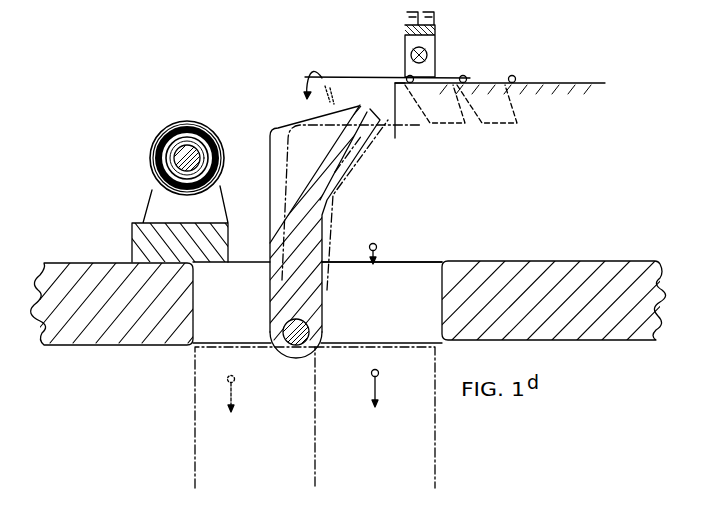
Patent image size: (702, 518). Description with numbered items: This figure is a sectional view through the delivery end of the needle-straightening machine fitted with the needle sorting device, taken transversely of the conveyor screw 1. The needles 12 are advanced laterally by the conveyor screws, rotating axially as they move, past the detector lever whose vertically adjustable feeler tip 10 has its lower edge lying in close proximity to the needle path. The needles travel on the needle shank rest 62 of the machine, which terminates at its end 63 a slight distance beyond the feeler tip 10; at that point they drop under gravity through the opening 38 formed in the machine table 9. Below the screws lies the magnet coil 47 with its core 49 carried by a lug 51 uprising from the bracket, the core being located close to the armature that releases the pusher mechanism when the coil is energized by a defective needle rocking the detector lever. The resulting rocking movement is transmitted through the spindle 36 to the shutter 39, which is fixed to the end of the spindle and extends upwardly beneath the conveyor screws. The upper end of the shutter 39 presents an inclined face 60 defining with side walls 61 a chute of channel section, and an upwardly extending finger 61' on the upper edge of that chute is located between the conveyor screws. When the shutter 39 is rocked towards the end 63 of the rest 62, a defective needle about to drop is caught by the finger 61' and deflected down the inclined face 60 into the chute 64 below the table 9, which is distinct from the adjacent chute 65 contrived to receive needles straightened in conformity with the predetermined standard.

The conveyor screw 1 is at (352, 112).
The machine table 9 is at (353, 303).
The feeler tip 10 is at (455, 52).
The needles 12 is at (515, 77).
The spindle 36 is at (287, 330).
The opening 38 is at (442, 310).
The shutter 39 is at (290, 281).
The magnet coil 47 is at (163, 132).
The core 49 is at (174, 158).
The lug 51 is at (150, 198).
The inclined face 60 is at (307, 183).
The side walls 61 is at (332, 214).
The finger 61' is at (357, 159).
The needle shank rest 62 is at (582, 83).
The end of needle shank rest 63 is at (397, 86).
The chute 64 is at (255, 417).
The chute 65 is at (375, 417).